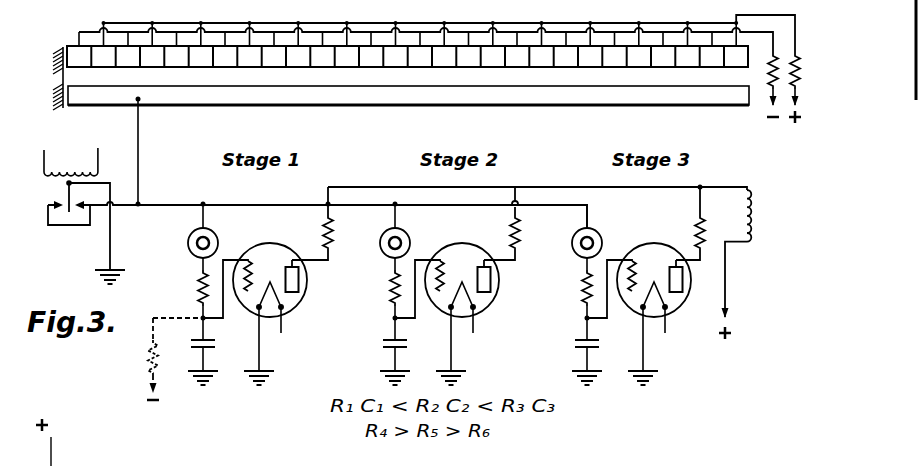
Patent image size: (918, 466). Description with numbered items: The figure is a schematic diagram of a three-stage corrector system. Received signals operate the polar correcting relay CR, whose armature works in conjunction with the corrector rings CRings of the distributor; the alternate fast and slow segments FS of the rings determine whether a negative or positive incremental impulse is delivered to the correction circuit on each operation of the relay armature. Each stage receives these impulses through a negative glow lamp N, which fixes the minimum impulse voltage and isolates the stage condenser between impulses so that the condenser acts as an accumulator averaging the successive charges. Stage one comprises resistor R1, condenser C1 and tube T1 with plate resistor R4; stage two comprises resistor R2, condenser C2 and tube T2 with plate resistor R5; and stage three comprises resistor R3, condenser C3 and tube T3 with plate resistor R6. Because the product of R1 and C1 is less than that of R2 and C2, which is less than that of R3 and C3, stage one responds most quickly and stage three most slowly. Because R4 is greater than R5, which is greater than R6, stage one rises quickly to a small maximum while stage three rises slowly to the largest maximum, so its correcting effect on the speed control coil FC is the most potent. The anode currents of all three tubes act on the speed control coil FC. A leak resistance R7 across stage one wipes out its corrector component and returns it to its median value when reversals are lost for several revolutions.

The fast and slow corrector segments FS is at (427, 69).
The corrector rings CRings is at (408, 133).
The polar correcting relay CR is at (311, 198).
The negative glow lamps N is at (403, 335).
The resistor R1 is at (190, 295).
The condenser C1 is at (211, 351).
The tube of stage one T1 is at (255, 301).
The resistor R4 is at (323, 232).
The resistor R2 is at (383, 295).
The condenser C2 is at (386, 351).
The tube of stage two T2 is at (447, 301).
The resistor R5 is at (514, 223).
The resistor R3 is at (575, 295).
The condenser C3 is at (577, 351).
The tube of stage three T3 is at (639, 301).
The resistor R6 is at (701, 223).
The leak resistance R7 is at (148, 370).
The speed control coil FC is at (756, 264).